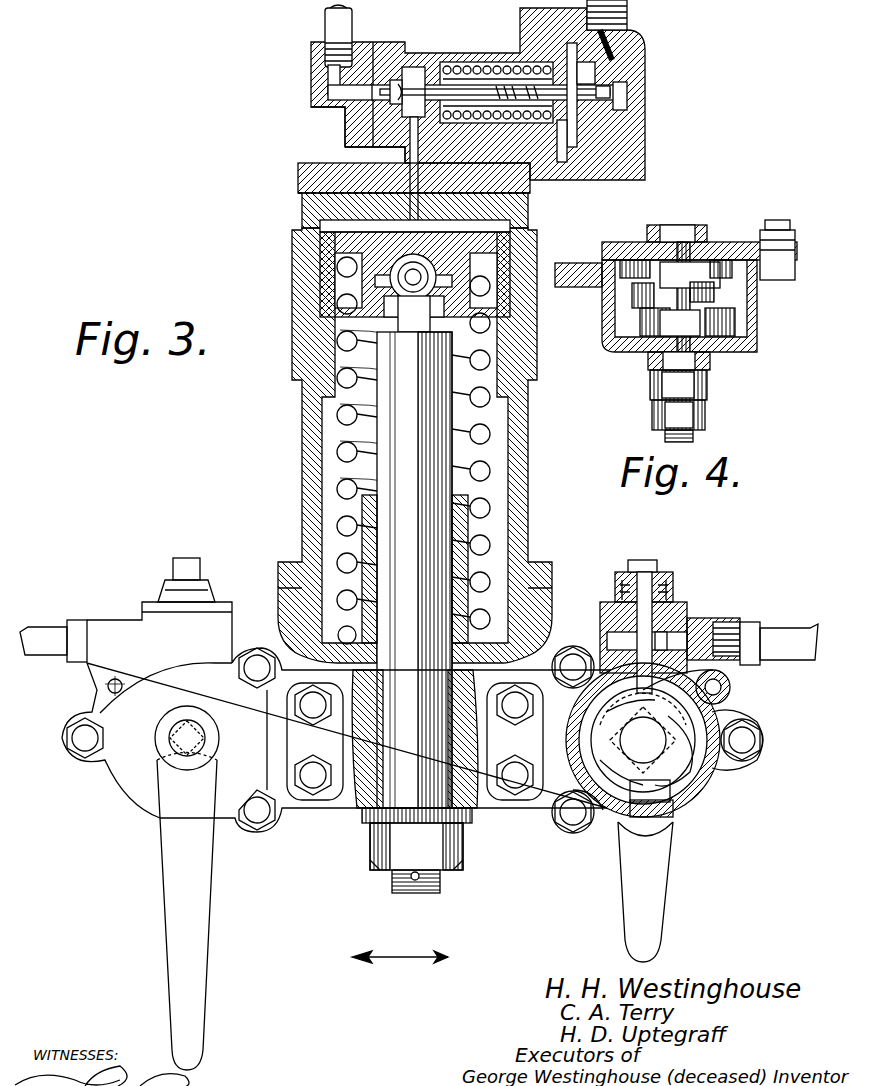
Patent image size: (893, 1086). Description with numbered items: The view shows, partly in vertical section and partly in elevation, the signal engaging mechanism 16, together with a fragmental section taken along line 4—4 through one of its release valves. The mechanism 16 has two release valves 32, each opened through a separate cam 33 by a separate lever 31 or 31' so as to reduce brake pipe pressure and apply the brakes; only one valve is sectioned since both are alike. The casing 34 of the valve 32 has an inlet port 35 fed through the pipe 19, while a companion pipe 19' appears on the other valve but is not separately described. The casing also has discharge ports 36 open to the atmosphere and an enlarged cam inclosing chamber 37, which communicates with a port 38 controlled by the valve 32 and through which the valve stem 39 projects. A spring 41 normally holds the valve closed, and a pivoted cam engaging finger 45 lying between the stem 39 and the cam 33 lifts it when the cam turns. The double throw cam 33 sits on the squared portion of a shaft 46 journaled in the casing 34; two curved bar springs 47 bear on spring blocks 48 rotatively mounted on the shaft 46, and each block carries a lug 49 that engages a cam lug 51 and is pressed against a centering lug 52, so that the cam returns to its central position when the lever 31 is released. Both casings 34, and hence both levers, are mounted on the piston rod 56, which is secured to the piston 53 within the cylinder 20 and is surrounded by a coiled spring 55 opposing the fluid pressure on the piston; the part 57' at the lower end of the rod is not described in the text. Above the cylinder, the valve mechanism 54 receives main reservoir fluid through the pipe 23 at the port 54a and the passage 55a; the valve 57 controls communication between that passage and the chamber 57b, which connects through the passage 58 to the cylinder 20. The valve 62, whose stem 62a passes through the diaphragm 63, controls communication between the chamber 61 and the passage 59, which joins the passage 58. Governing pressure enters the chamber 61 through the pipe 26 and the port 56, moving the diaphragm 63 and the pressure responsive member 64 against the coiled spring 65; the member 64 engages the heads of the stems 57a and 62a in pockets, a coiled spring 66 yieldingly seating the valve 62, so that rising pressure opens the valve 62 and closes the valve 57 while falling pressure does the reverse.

In FIG. 3, the signal engaging mechanism 16 is at (268, 399).
In FIG. 3, the pipe 19 is at (789, 624).
In FIG. 3, the pipe 19' is at (53, 615).
In FIG. 3, the cylinder 20 is at (305, 449).
In FIG. 3, the pipe 23 is at (325, 16).
In FIG. 3, the pipe 26 is at (630, 8).
In FIG. 3, the lever 31 is at (645, 892).
In FIG. 4, the lever 31 is at (647, 397).
In FIG. 3, the lever 31' is at (154, 888).
In FIG. 3, the release valve 32 is at (675, 636).
In FIG. 3, the cam 33 is at (758, 724).
In FIG. 4, the cam 33 is at (660, 297).
In FIG. 3, the casing 34 is at (208, 641).
In FIG. 3, the inlet port 35 is at (700, 640).
In FIG. 3, the discharge ports 36 is at (645, 838).
In FIG. 3, the cam inclosing chamber 37 is at (590, 740).
In FIG. 3, the port 38 is at (590, 695).
In FIG. 3, the valve stem 39 is at (592, 712).
In FIG. 3, the section line 4 is at (565, 745).
In FIG. 3, the spring 41 is at (662, 600).
In FIG. 3, the cam engaging finger 45 is at (705, 720).
In FIG. 3, the shaft 46 is at (643, 740).
In FIG. 4, the shaft 46 is at (680, 230).
In FIG. 3, the curved bar springs 47 is at (700, 766).
In FIG. 3, the spring block 48 is at (565, 790).
In FIG. 4, the spring block 48 is at (680, 268).
In FIG. 3, the lug 49 is at (600, 826).
In FIG. 4, the lug 49 is at (663, 300).
In FIG. 3, the cam lug 51 is at (660, 786).
In FIG. 4, the cam lug 51 is at (700, 296).
In FIG. 3, the centering lug 52 is at (650, 800).
In FIG. 3, the piston 53 is at (330, 264).
In FIG. 3, the valve mechanism 54 is at (318, 126).
In FIG. 3, the port 54a is at (330, 78).
In FIG. 3, the coiled spring 55 is at (345, 495).
In FIG. 3, the passage 55a is at (340, 97).
In FIG. 3, the piston rod 56 is at (412, 680).
In FIG. 3, the valve 57 is at (428, 172).
In FIG. 3, the stuffing box 57' is at (388, 781).
In FIG. 3, the valve stem 57a is at (418, 75).
In FIG. 3, the chamber 57b is at (412, 66).
In FIG. 3, the passage 58 is at (412, 151).
In FIG. 3, the passage 59 is at (616, 165).
In FIG. 3, the chamber 61 is at (590, 70).
In FIG. 3, the valve 62 is at (628, 125).
In FIG. 3, the valve stem 62a is at (608, 100).
In FIG. 3, the diaphragm 63 is at (561, 150).
In FIG. 3, the pressure responsive member 64 is at (490, 80).
In FIG. 3, the coiled spring 65 is at (466, 68).
In FIG. 3, the coiled spring 66 is at (522, 118).